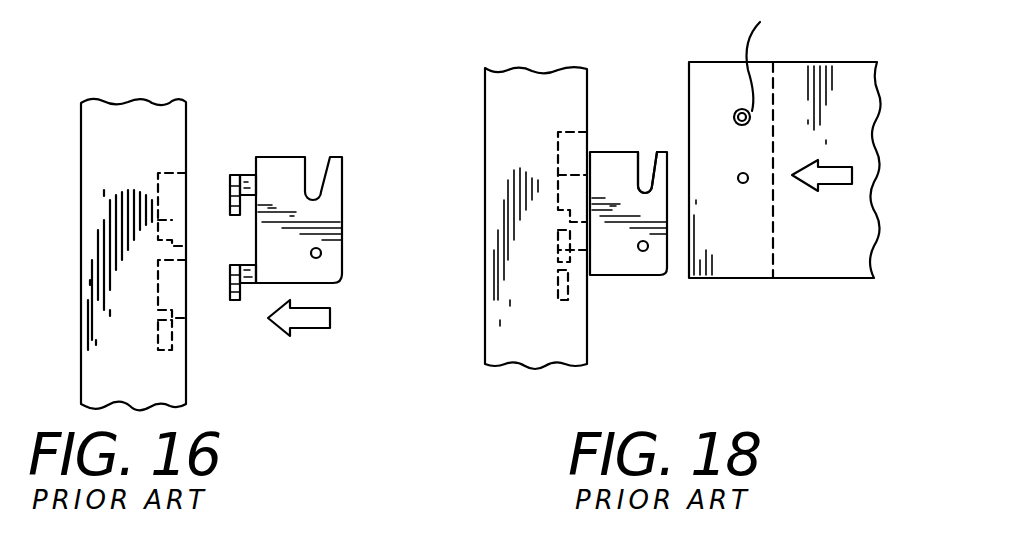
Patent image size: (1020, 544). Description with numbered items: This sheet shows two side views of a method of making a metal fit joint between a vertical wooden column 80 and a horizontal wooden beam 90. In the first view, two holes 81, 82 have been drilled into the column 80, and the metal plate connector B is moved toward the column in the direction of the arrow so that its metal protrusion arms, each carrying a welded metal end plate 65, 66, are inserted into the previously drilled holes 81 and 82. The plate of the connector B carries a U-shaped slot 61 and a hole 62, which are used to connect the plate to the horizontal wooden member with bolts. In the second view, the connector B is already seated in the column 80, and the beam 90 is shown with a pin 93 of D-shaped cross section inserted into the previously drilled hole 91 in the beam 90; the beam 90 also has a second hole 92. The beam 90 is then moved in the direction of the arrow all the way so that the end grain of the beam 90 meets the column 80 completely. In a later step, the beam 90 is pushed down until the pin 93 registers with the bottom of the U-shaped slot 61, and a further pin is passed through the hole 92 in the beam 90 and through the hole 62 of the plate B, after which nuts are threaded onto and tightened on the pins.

In FIG. 16, the column 80 is at (88, 153).
In FIG. 18, the column 80 is at (497, 132).
In FIG. 16, the hole 81 is at (165, 196).
In FIG. 16, the hole 82 is at (166, 296).
In FIG. 16, the metal plate connector B is at (342, 212).
In FIG. 18, the metal plate connector B is at (662, 276).
In FIG. 16, the end plate 65 is at (230, 183).
In FIG. 16, the end plate 66 is at (234, 302).
In FIG. 18, the U-shaped slot 61 is at (645, 186).
In FIG. 18, the hole 62 is at (640, 252).
In FIG. 18, the beam 90 is at (856, 90).
In FIG. 18, the hole 91 is at (733, 112).
In FIG. 18, the hole 92 is at (745, 183).
In FIG. 18, the pin 93 is at (775, 55).